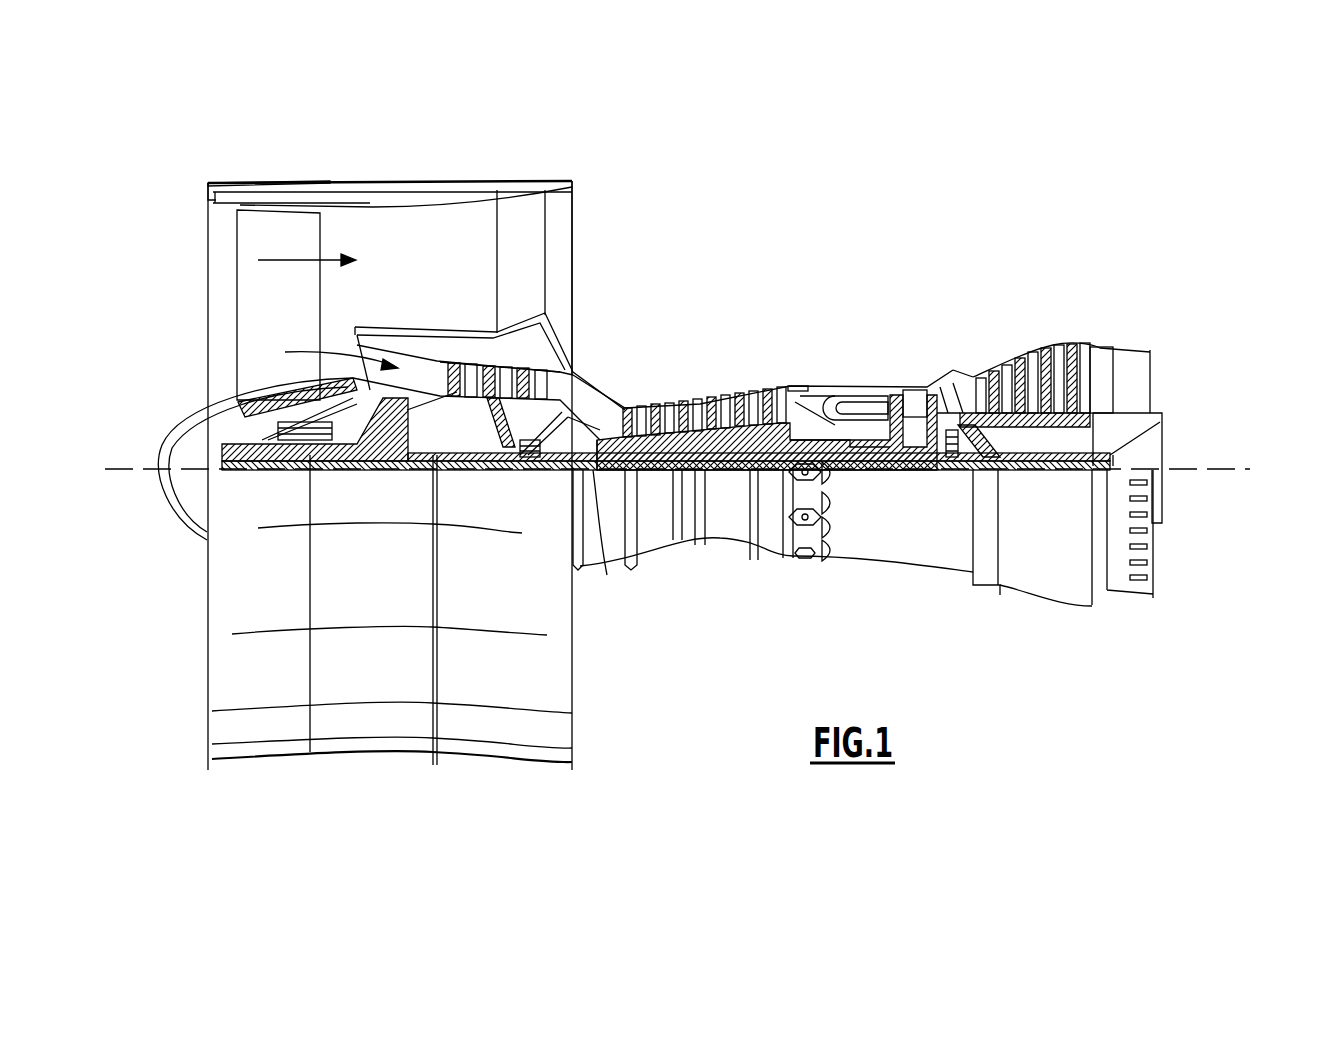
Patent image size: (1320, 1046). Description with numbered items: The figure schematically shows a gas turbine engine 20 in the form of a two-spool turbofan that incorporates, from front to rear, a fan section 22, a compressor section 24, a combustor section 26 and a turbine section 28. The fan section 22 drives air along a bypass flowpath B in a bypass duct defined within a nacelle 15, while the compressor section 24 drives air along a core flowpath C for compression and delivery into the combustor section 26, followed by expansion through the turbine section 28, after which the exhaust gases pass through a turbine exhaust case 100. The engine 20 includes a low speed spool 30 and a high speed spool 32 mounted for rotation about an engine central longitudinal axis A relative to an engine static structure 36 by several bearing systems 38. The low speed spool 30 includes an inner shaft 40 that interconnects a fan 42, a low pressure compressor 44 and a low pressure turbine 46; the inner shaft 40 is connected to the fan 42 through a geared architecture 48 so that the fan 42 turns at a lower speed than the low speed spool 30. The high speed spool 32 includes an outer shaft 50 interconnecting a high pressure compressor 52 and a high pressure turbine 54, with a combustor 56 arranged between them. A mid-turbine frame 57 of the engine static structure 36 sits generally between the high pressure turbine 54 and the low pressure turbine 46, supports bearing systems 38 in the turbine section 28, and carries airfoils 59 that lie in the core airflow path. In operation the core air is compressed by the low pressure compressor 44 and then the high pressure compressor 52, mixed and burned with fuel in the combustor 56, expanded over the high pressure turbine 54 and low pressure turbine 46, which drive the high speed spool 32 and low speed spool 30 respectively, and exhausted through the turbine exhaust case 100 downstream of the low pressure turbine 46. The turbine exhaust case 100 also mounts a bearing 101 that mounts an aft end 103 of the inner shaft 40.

The gas turbine engine 20 is at (856, 236).
The fan section 22 is at (322, 175).
The compressor section 24 is at (622, 374).
The combustor section 26 is at (848, 364).
The turbine section 28 is at (993, 327).
The nacelle 15 is at (391, 190).
The low speed spool 30 is at (728, 482).
The high speed spool 32 is at (768, 440).
The engine static structure 36 is at (768, 572).
The bearing systems 38 is at (530, 450).
The inner shaft 40 is at (592, 520).
The fan 42 is at (299, 318).
The low pressure compressor 44 is at (507, 377).
The low pressure turbine 46 is at (1042, 355).
The geared architecture 48 is at (398, 450).
The outer shaft 50 is at (855, 462).
The high pressure compressor 52 is at (705, 447).
The high pressure turbine 54 is at (912, 388).
The combustor 56 is at (845, 412).
The mid-turbine frame 57 is at (961, 374).
The airfoils 59 is at (985, 437).
The turbine exhaust case 100 is at (1097, 350).
The bearing 101 is at (1135, 421).
The aft end 103 is at (1097, 480).
The engine central longitudinal axis A is at (1250, 466).
The bypass flowpath B is at (290, 258).
The core flowpath C is at (333, 353).